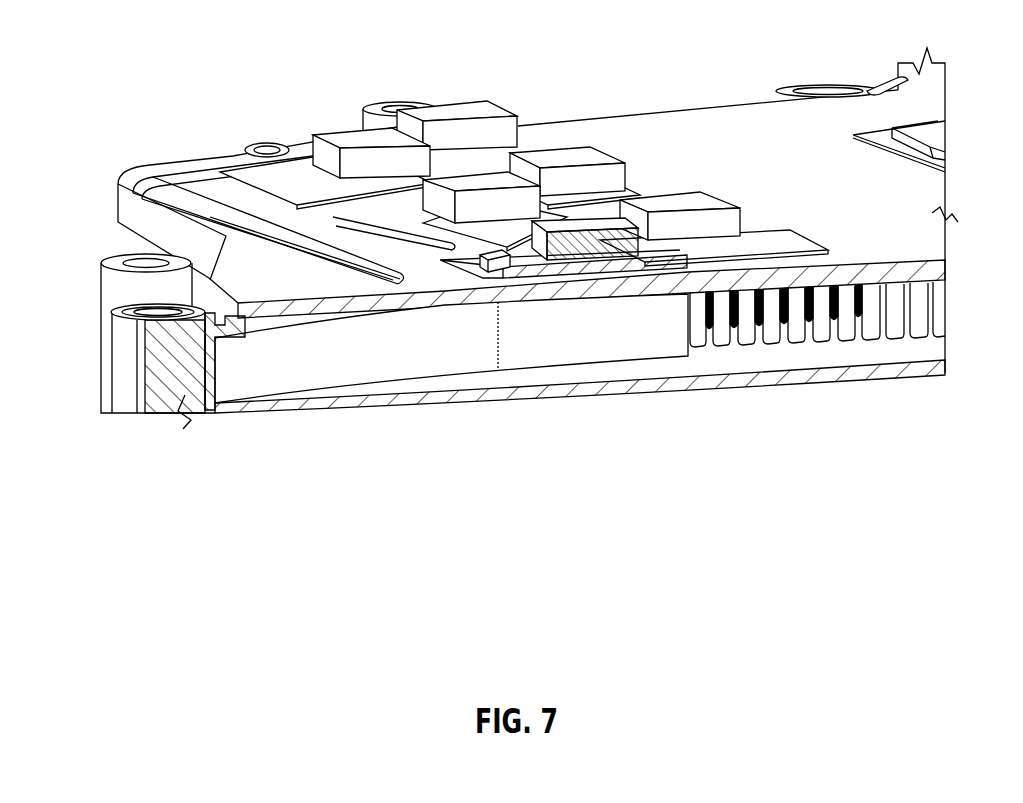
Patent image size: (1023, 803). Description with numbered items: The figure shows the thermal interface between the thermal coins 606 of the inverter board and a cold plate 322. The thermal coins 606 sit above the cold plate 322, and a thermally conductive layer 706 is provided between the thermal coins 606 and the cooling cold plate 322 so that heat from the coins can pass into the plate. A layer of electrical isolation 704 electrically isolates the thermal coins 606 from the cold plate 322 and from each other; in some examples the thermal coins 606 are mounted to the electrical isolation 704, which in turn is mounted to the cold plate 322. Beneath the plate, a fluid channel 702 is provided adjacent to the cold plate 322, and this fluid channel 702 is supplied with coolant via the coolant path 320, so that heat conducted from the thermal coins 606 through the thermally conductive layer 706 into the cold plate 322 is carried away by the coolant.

The coolant path 320 is at (134, 418).
The cold plate 322 is at (697, 120).
The thermal coins 606 is at (450, 100).
The fluid channel 702 is at (905, 323).
The electrical isolation 704 is at (247, 172).
The thermally conductive layer 706 is at (283, 157).